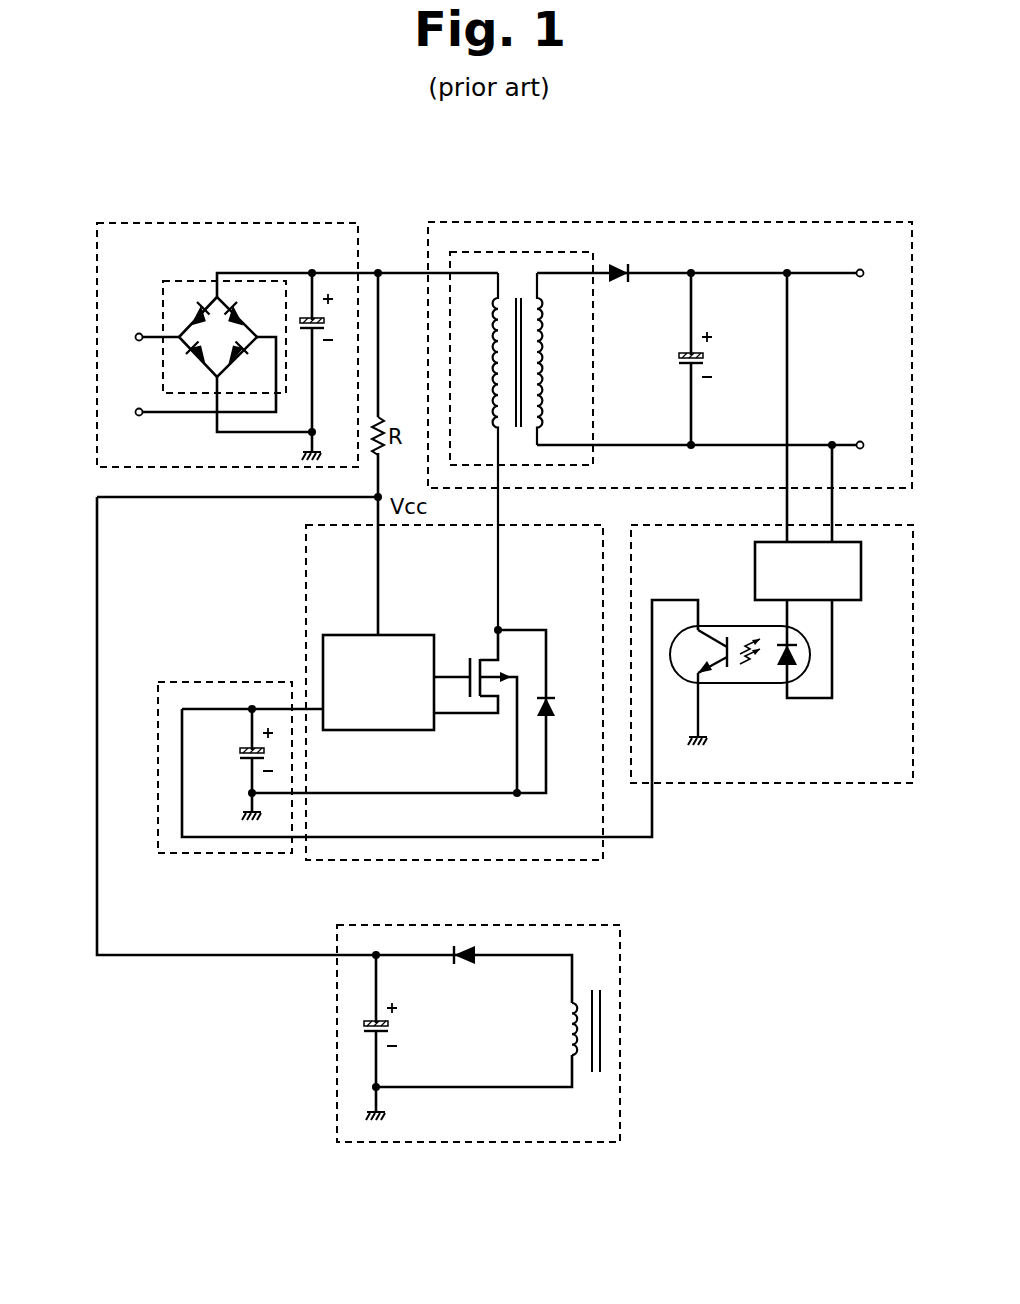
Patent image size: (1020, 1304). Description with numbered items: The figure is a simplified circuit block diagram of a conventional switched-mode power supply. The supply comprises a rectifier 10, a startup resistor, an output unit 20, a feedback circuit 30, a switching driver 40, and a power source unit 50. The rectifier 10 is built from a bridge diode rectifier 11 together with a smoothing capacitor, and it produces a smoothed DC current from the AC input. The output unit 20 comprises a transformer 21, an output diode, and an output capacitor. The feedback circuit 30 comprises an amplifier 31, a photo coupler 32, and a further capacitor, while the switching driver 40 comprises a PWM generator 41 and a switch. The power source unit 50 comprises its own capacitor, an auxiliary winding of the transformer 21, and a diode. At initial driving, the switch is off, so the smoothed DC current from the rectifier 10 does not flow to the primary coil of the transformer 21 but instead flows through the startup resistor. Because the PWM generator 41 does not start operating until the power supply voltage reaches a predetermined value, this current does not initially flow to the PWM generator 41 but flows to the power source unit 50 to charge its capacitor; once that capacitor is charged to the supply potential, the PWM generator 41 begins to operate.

The rectifier 10 is at (215, 222).
The bridge diode rectifier 11 is at (163, 313).
The output unit 20 is at (607, 222).
The transformer 21 is at (593, 455).
The feedback circuit 30 is at (232, 682).
The amplifier 31 is at (861, 600).
The photo coupler 32 is at (738, 683).
The switching driver 40 is at (603, 853).
The PWM generator 41 is at (347, 635).
The power source unit 50 is at (620, 965).